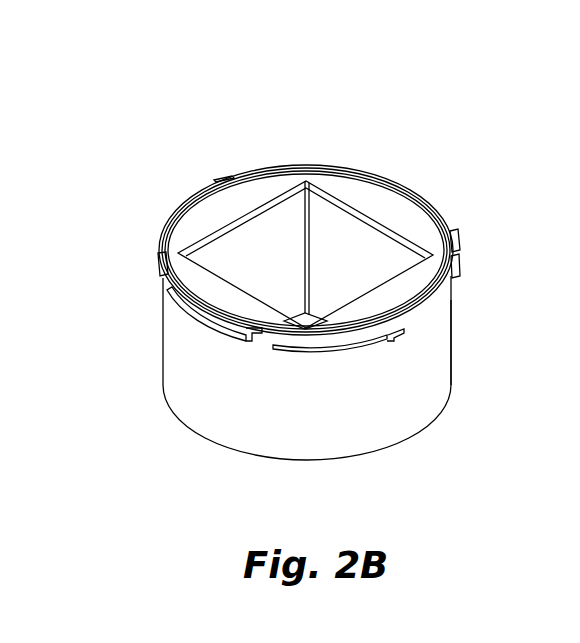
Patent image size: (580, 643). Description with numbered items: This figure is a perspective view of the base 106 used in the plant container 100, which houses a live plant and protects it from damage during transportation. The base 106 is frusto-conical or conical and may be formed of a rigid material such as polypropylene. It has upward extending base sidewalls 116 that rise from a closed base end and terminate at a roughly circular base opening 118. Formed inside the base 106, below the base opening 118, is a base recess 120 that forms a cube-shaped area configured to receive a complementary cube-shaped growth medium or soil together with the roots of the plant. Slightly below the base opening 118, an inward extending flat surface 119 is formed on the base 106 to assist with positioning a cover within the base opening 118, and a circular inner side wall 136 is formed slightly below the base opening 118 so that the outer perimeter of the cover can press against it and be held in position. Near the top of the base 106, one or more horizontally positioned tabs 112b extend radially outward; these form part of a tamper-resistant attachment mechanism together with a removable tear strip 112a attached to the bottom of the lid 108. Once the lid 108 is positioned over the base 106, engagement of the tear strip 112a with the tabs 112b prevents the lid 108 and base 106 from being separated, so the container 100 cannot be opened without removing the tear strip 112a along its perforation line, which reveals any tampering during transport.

The container 100 is at (184, 134).
The base 106 is at (162, 342).
The lid 108 is at (579, 126).
The tear strip 112a is at (579, 516).
The tabs 112b is at (454, 278).
The base sidewalls 116 is at (452, 345).
The base opening 118 is at (410, 186).
The flat surface 119 is at (351, 191).
The base recess 120 is at (208, 233).
The inner side wall 136 is at (290, 166).